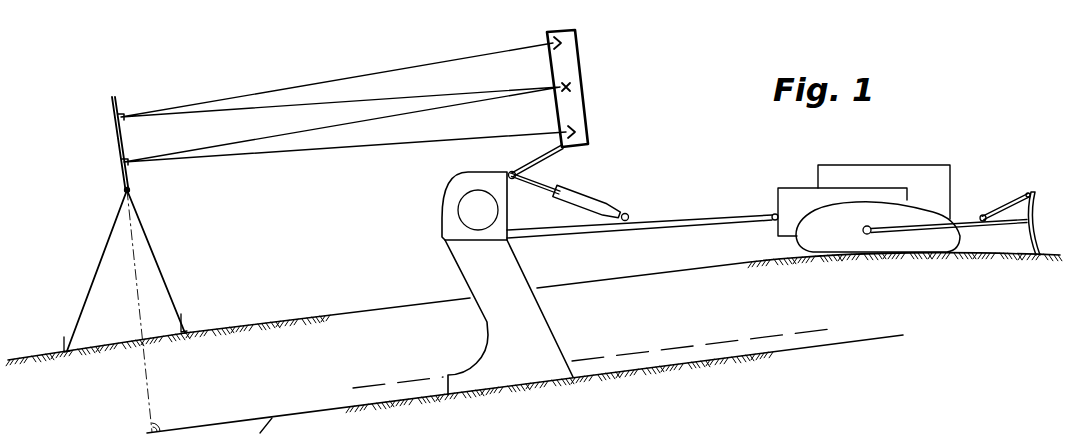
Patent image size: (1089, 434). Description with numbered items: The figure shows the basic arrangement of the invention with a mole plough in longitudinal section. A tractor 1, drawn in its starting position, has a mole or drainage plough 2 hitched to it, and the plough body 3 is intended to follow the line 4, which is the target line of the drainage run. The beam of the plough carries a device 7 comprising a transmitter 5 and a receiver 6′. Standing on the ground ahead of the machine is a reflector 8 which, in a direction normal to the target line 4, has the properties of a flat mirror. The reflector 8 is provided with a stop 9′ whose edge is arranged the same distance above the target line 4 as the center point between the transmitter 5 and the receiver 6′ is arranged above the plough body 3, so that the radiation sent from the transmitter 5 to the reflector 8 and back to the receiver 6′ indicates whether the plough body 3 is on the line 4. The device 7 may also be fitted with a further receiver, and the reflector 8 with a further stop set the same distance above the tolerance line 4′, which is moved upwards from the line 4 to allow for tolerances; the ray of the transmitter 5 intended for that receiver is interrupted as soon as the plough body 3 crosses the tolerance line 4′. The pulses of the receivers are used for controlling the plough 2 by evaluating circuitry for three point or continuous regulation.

The tractor 1 is at (928, 163).
The mole or drainage plough 2 is at (517, 257).
The plough body 3 is at (480, 388).
The line 4 is at (802, 347).
The tolerance line 4′ is at (645, 352).
The transmitter 5 is at (580, 88).
The receiver 6′ is at (589, 130).
The device 7 is at (560, 121).
The reflector 8 is at (123, 143).
The stop 9′ is at (133, 187).